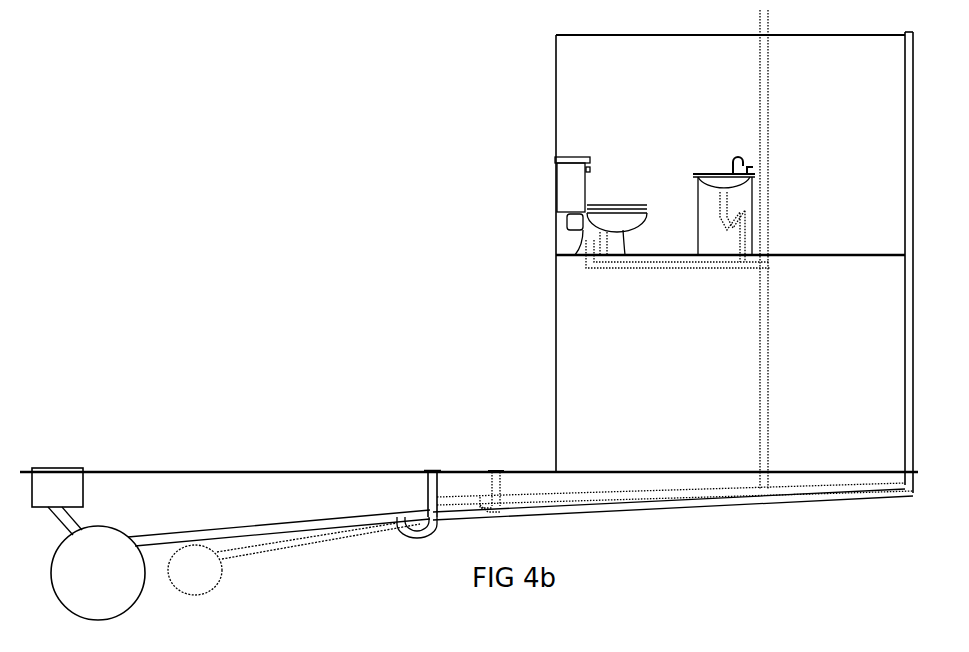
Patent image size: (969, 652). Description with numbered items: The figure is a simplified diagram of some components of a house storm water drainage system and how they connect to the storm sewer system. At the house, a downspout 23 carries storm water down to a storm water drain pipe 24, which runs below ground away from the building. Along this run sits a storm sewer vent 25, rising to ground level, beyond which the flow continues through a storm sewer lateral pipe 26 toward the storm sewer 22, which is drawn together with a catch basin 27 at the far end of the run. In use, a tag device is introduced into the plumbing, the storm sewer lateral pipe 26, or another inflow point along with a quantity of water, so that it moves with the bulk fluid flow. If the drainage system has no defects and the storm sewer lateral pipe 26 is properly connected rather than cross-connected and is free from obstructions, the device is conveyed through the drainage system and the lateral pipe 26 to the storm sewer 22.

The storm sewer 22 is at (122, 535).
The downspout 23 is at (911, 100).
The storm water drain pipe 24 is at (847, 497).
The storm sewer vent 25 is at (433, 468).
The storm sewer lateral pipe 26 is at (225, 532).
The catch basin 27 is at (65, 467).